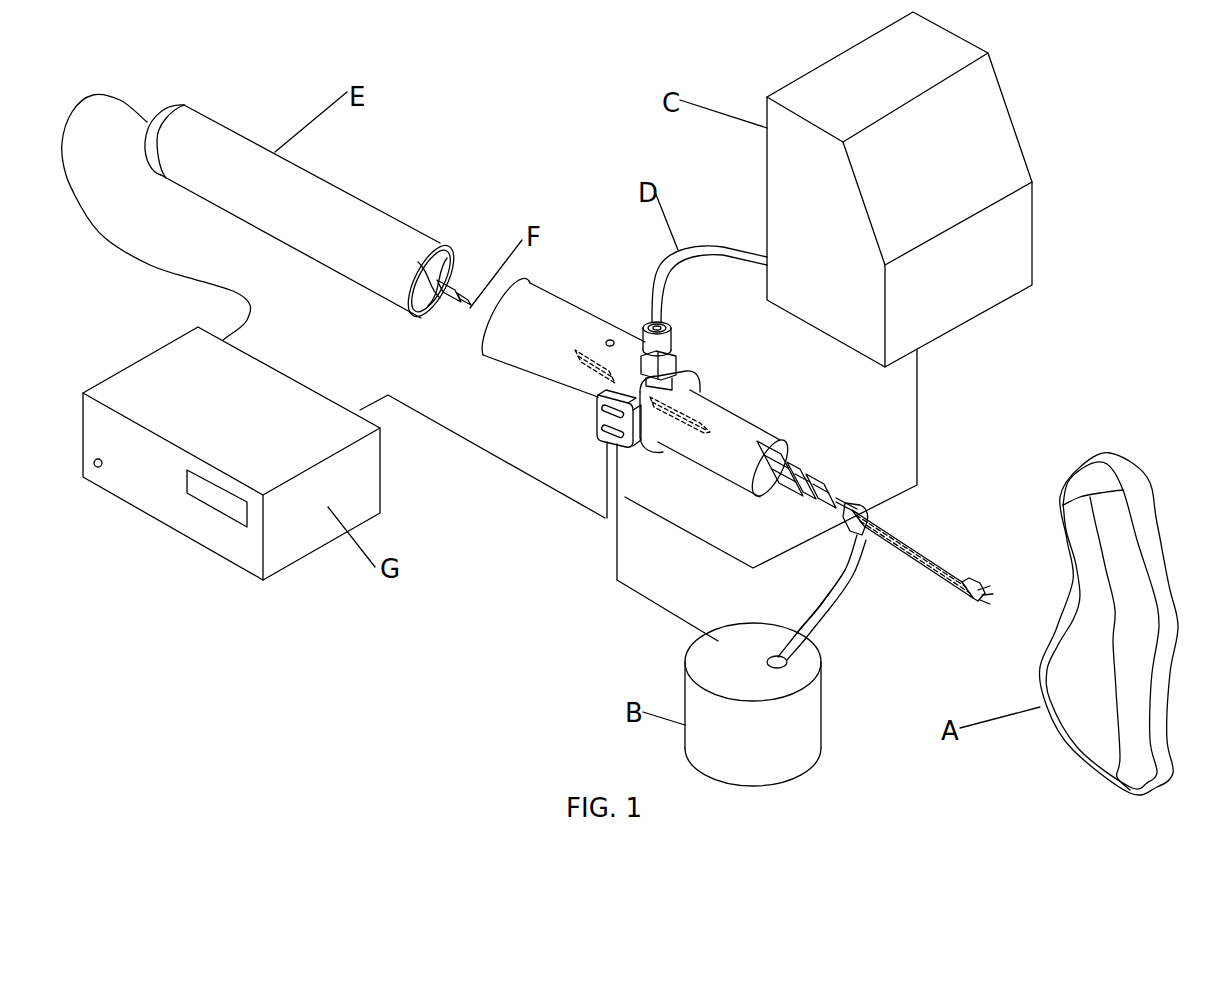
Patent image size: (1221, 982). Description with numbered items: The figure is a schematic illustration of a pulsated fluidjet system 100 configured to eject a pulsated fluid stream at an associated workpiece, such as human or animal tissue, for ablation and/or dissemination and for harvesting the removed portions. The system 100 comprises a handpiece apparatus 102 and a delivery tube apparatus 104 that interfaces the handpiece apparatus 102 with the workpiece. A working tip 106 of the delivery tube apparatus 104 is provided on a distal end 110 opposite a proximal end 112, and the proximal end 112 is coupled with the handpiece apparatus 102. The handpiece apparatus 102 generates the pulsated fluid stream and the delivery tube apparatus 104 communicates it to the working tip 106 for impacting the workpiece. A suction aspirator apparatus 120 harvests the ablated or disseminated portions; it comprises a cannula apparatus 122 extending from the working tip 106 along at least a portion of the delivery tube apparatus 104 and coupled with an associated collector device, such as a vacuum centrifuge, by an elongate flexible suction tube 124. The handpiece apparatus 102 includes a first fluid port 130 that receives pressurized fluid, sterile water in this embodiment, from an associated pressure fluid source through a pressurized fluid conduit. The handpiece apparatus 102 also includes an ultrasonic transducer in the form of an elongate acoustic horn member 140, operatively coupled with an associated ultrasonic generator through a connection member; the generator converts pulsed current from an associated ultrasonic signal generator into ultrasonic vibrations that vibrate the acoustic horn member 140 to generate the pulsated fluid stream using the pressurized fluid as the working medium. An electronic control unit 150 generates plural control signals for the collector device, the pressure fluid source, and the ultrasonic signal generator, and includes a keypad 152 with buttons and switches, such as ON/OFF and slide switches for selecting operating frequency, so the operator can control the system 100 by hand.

The pulsated fluidjet system 100 is at (347, 623).
The handpiece apparatus 102 is at (715, 405).
The delivery tube apparatus 104 is at (845, 497).
The working tip 106 is at (978, 578).
The distal end 110 is at (970, 603).
The proximal end 112 is at (895, 503).
The suction aspirator apparatus 120 is at (800, 607).
The cannula apparatus 122 is at (884, 579).
The elongate flexible suction tube 124 is at (813, 620).
The first fluid port 130 is at (637, 320).
The elongate acoustic horn member 140 is at (570, 357).
The electronic control unit 150 is at (595, 439).
The keypad 152 is at (597, 419).